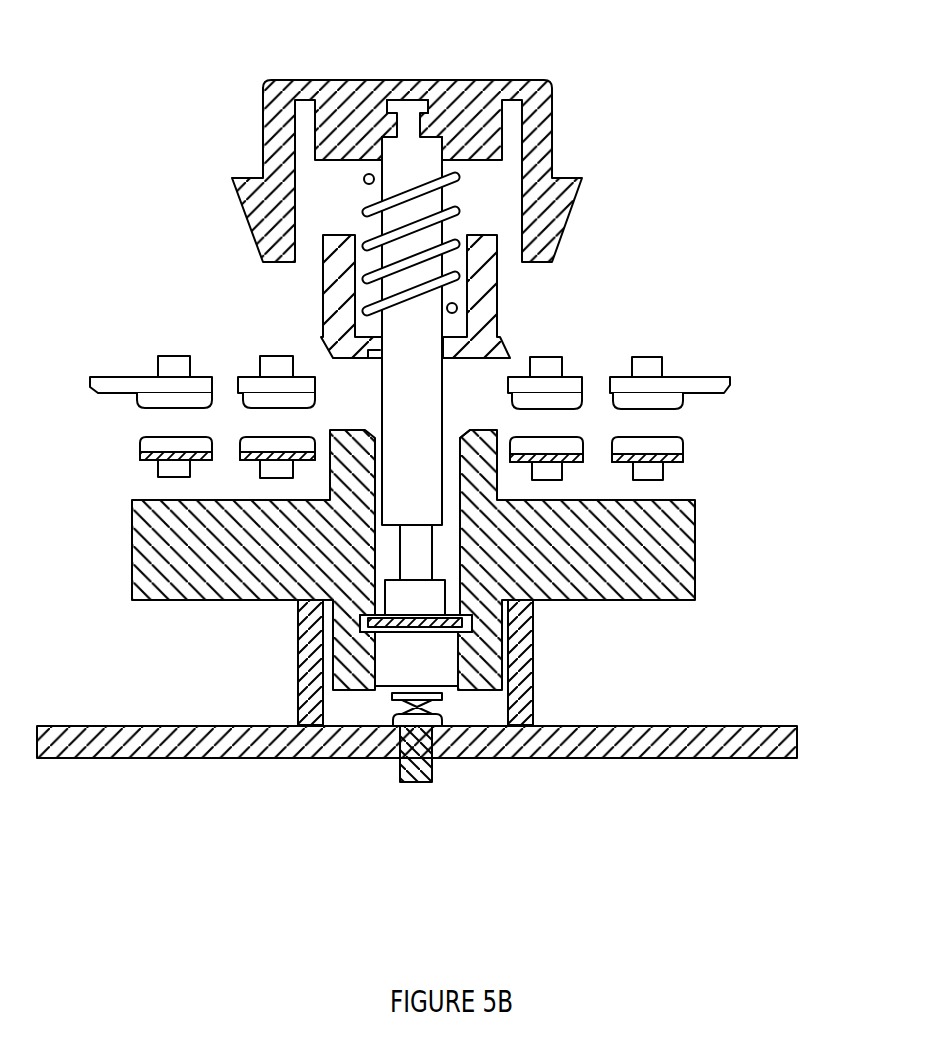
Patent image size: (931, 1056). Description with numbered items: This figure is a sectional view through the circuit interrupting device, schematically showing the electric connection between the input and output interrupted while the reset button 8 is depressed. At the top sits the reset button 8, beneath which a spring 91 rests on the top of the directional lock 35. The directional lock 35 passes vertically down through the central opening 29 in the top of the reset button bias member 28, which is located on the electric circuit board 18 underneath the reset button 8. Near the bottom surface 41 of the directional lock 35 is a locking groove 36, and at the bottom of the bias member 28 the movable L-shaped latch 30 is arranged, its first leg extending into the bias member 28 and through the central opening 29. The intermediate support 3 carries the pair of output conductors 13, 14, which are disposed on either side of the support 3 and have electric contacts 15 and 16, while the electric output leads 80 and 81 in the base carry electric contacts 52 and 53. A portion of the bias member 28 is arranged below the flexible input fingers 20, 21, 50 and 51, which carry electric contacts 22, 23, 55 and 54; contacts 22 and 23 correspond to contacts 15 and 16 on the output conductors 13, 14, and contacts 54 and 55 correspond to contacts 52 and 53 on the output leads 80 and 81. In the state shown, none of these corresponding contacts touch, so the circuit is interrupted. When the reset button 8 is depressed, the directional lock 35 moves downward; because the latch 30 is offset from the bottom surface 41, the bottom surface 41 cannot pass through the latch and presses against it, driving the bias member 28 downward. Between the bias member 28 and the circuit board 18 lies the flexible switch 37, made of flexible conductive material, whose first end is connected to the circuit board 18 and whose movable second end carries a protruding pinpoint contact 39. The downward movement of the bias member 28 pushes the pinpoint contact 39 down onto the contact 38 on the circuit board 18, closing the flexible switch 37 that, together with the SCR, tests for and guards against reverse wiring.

The reset button 8 is at (447, 87).
The spring 91 is at (447, 213).
The intermediate support 3 is at (488, 275).
The directional lock 35 is at (427, 387).
The locking groove 36 is at (377, 568).
The L-shaped latch 30 is at (450, 640).
The reset button bias member 28 is at (145, 535).
The central opening 29 is at (448, 430).
The bottom surface 41 is at (340, 612).
The electric circuit board 18 is at (797, 757).
The contact 38 is at (400, 700).
The flexible switch 37 is at (420, 703).
The pinpoint contact 39 is at (417, 707).
The output conductor 13 is at (115, 383).
The electric contact 15 is at (163, 404).
The electric output lead 80 is at (308, 382).
The electric contact 52 is at (243, 395).
The electric output lead 81 is at (520, 375).
The electric contact 53 is at (582, 398).
The output conductor 14 is at (713, 383).
The electric contact 16 is at (677, 408).
The electric contact 22 is at (150, 445).
The flexible input finger 20 is at (147, 458).
The electric contact 55 is at (243, 441).
The flexible input finger 50 is at (263, 467).
The electric contact 54 is at (577, 443).
The flexible input finger 51 is at (577, 467).
The electric contact 23 is at (673, 443).
The flexible input finger 21 is at (668, 462).